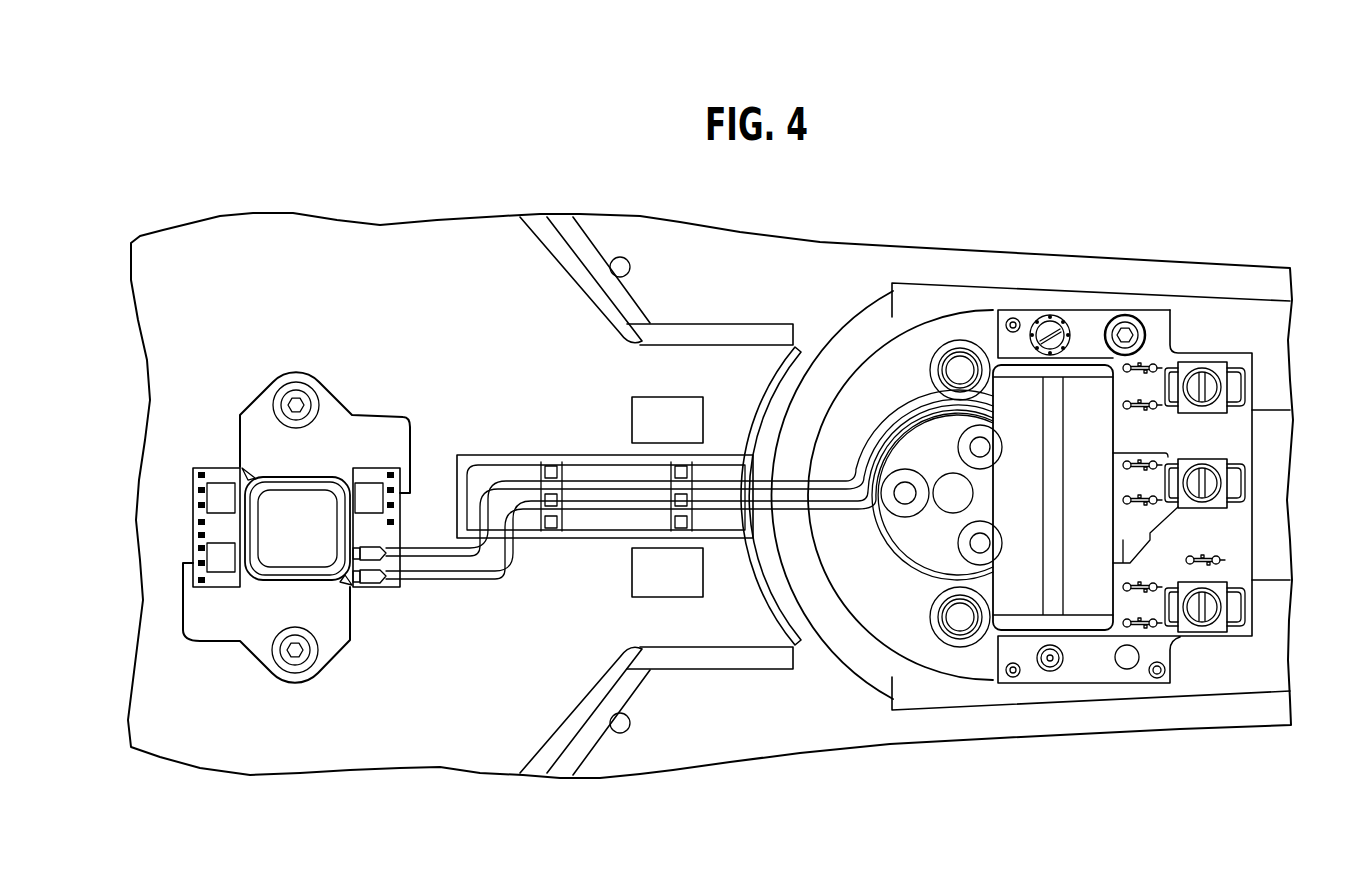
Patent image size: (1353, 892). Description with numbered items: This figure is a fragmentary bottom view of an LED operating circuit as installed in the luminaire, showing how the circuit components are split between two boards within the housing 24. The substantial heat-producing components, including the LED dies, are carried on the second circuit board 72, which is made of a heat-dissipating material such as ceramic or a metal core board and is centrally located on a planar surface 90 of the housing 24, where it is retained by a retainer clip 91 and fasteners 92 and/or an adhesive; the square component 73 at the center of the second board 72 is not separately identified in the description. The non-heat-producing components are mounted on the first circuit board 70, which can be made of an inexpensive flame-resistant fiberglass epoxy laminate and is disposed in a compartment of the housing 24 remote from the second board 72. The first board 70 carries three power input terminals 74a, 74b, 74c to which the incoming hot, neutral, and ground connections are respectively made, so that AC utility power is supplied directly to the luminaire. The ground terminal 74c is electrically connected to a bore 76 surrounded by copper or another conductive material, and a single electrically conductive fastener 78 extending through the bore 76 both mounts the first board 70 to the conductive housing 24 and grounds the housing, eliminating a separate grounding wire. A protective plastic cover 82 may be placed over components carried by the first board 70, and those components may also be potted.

The housing 24 is at (873, 257).
The first circuit board 70 is at (1220, 365).
The second circuit board 72 is at (296, 373).
The sensor module 73 is at (312, 508).
The power input terminal 74a is at (1215, 624).
The power input terminal 74b is at (1218, 465).
The ground power terminal 74c is at (1222, 366).
The bore 76 is at (1150, 320).
The fastener 78 is at (1112, 320).
The protective plastic cover 82 is at (1032, 362).
The planar surface 90 is at (470, 321).
The retainer clip 91 is at (190, 600).
The fasteners 92 is at (282, 402).